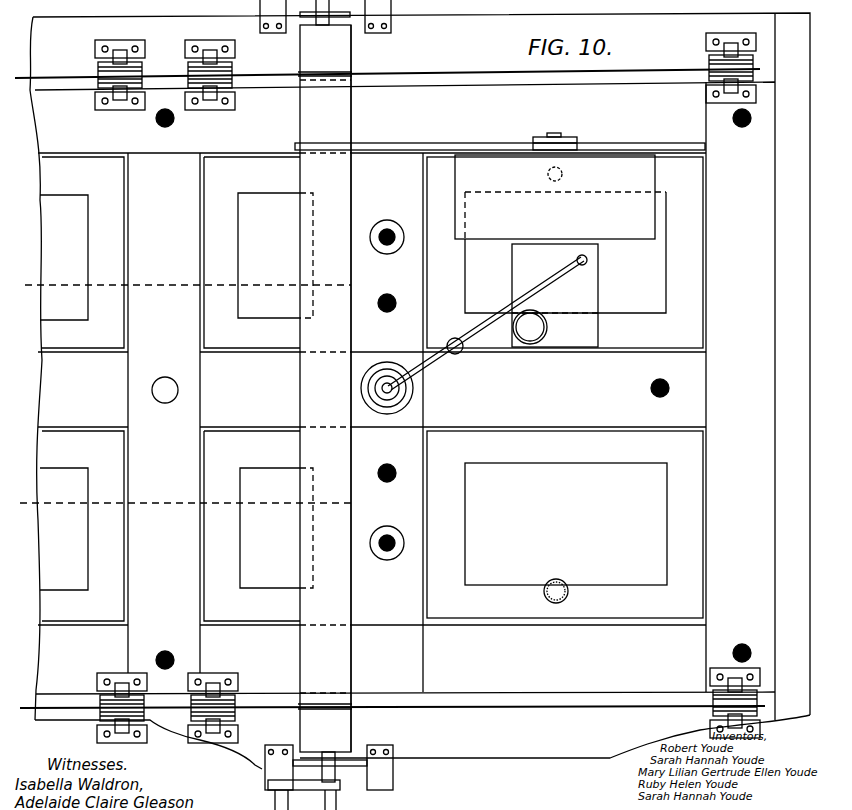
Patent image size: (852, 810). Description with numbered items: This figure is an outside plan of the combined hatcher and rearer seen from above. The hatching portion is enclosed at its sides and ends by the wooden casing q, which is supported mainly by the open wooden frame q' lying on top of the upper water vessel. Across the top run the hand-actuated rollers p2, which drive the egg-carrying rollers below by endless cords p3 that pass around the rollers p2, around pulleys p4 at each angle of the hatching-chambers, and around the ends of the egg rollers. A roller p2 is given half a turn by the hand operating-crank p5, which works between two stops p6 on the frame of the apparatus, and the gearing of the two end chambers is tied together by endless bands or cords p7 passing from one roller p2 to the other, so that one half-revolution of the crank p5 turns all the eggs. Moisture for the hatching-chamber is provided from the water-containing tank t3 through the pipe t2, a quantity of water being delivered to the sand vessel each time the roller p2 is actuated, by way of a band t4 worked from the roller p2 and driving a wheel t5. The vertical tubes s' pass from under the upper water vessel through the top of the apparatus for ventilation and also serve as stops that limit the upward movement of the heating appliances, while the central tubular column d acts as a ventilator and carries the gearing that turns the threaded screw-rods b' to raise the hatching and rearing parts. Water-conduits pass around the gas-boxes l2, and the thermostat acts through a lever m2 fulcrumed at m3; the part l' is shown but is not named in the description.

The wooden casing q is at (420, 391).
The open wooden frame q' is at (388, 388).
The hand-actuated roller p2 is at (342, 44).
The endless cords p3 is at (56, 77).
The pulleys p4 is at (100, 70).
The hand operating-crank p5 is at (302, 790).
The stops p6 is at (268, 770).
The endless bands or cords p7 is at (200, 285).
The pipe t2 is at (547, 174).
The water-containing tank t3 is at (555, 197).
The band t4 is at (442, 143).
The wheel t5 is at (545, 137).
The ring l' is at (547, 327).
The gas-boxes l2 is at (555, 295).
The lever m2 is at (521, 305).
The fulcrum m3 is at (415, 383).
The screw-rods b' is at (389, 390).
The vertical tubes s' is at (444, 389).
The central tubular column d is at (165, 403).